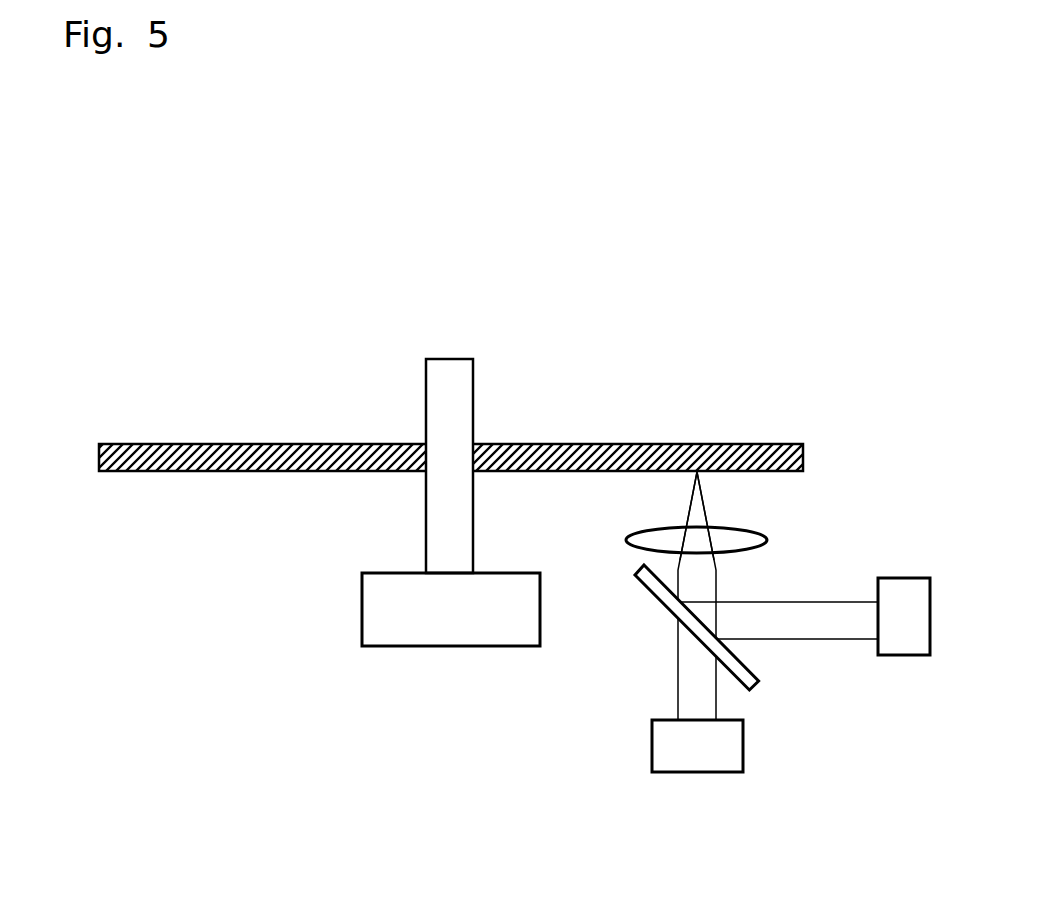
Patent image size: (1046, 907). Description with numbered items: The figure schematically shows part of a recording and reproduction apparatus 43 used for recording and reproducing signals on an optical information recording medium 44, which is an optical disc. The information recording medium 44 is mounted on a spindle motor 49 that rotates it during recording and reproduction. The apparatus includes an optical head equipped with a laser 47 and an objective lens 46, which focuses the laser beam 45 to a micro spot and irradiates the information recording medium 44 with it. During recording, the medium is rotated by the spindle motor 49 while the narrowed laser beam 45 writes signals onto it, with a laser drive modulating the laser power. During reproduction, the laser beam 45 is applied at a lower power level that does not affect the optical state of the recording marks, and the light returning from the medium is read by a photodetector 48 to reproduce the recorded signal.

The recording and reproduction apparatus 43 is at (248, 242).
The information recording medium 44 is at (300, 453).
The laser beam 45 is at (697, 508).
The objective lens 46 is at (732, 540).
The laser 47 is at (908, 620).
The photodetector 48 is at (698, 752).
The spindle motor 49 is at (452, 609).